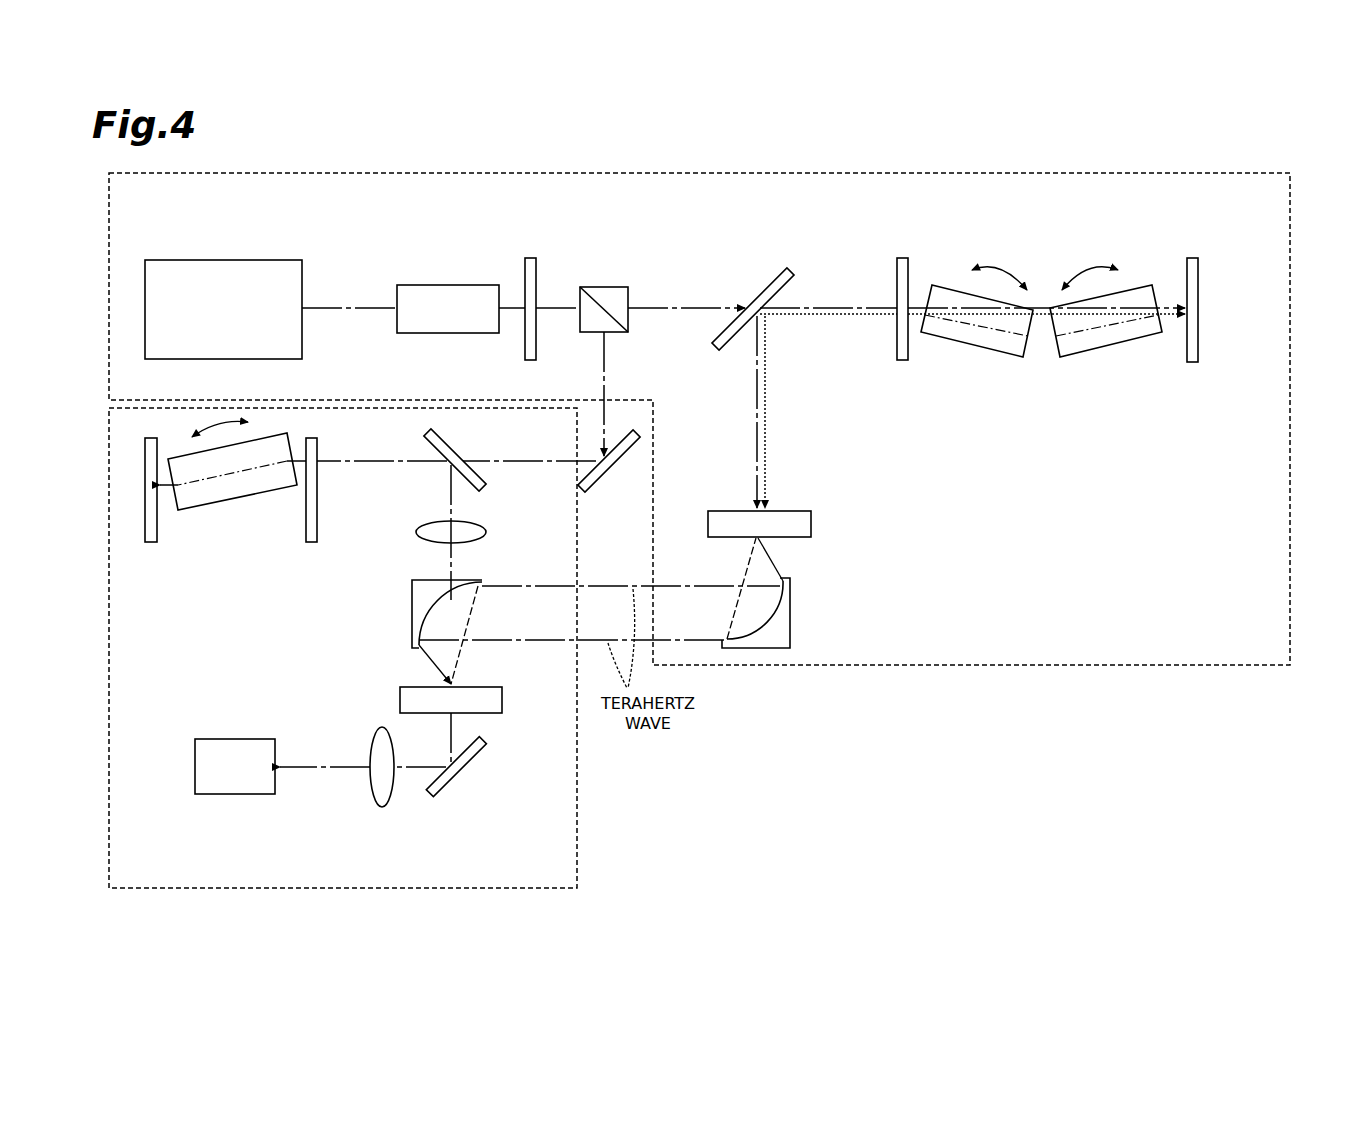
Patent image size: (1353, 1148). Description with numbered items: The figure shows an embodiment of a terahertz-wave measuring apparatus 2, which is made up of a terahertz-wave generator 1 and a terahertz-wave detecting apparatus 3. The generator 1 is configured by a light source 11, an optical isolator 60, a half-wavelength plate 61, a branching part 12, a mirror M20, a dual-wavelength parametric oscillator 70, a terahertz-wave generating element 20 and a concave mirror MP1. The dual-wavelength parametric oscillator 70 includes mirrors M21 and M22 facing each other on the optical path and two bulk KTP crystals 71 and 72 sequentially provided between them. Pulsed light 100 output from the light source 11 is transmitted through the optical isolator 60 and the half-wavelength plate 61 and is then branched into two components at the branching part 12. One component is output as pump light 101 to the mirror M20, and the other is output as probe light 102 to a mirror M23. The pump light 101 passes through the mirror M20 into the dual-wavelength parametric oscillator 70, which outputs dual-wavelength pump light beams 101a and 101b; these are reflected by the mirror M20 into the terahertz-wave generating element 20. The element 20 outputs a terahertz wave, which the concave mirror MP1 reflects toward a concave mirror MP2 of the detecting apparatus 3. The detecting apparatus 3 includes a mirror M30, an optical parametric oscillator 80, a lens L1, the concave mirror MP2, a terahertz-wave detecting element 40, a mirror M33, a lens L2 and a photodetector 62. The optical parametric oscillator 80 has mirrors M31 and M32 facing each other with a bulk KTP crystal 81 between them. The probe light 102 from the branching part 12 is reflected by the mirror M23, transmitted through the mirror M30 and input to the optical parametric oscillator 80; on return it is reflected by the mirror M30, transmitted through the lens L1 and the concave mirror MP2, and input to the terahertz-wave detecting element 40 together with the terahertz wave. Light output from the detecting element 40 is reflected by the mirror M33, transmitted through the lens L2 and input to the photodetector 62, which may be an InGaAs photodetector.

The terahertz-wave generator 1 is at (937, 665).
The terahertz-wave measuring apparatus 2 is at (1076, 743).
The terahertz-wave detecting apparatus 3 is at (577, 832).
The light source 11 is at (275, 260).
The pulsed light 100 is at (340, 305).
The optical isolator 60 is at (448, 285).
The half-wavelength plate 61 is at (531, 258).
The branching part 12 is at (607, 287).
The pump light 101 is at (665, 312).
The probe light 102 is at (604, 384).
The dual-wavelength pump light beam 101a is at (755, 452).
The dual-wavelength pump light beam 101b is at (766, 400).
The mirror M20 is at (768, 284).
The mirror M21 is at (903, 258).
The mirror M22 is at (1200, 273).
The mirror M23 is at (624, 468).
The dual-wavelength parametric oscillator 70 is at (1046, 375).
The bulk KTP crystal 71 is at (952, 345).
The bulk KTP crystal 72 is at (1128, 345).
The terahertz-wave generating element 20 is at (812, 520).
The concave mirror MP1 is at (792, 630).
The concave mirror MP2 is at (411, 596).
The terahertz-wave detecting element 40 is at (503, 700).
The mirror M30 is at (455, 443).
The mirror M31 is at (318, 519).
The mirror M32 is at (151, 545).
The mirror M33 is at (469, 775).
The optical parametric oscillator 80 is at (287, 542).
The bulk KTP crystal 81 is at (273, 488).
The lens L1 is at (486, 531).
The lens L2 is at (384, 808).
The photodetector 62 is at (254, 796).